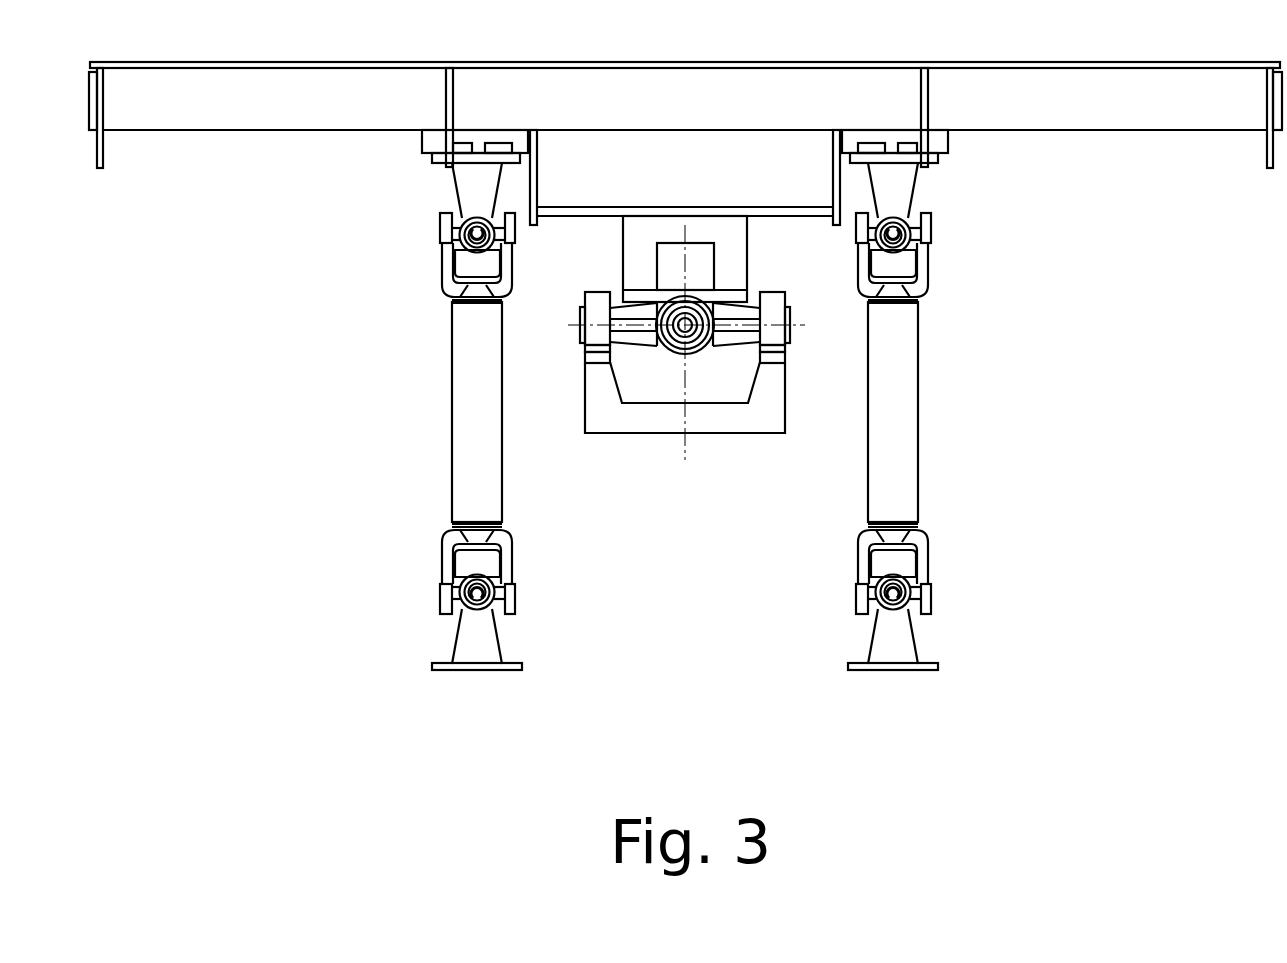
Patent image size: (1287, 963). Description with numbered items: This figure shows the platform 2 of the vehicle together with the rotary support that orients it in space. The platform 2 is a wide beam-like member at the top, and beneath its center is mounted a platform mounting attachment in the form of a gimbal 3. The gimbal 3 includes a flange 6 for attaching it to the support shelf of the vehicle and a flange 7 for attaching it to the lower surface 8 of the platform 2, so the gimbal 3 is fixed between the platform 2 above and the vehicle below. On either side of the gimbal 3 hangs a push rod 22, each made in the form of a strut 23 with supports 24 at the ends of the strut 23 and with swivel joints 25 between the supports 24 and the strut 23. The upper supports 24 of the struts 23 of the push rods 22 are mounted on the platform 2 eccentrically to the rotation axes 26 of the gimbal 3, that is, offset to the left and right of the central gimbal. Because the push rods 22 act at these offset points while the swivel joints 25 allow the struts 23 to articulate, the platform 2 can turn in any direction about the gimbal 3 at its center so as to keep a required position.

The platform 2 is at (685, 86).
The gimbal 3 is at (603, 317).
The flange 6 is at (685, 434).
The flange 7 is at (724, 259).
The lower surface 8 is at (685, 244).
The push rod 22 is at (691, 440).
The strut 23 is at (462, 439).
The support 24 is at (677, 440).
The swivel joint 25 is at (462, 242).
The rotation axes 26 is at (723, 327).